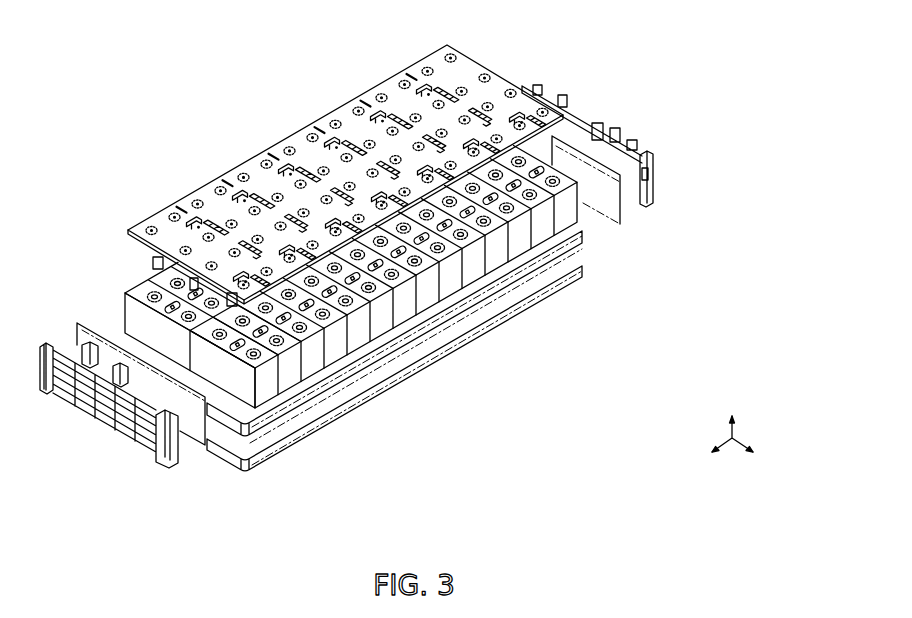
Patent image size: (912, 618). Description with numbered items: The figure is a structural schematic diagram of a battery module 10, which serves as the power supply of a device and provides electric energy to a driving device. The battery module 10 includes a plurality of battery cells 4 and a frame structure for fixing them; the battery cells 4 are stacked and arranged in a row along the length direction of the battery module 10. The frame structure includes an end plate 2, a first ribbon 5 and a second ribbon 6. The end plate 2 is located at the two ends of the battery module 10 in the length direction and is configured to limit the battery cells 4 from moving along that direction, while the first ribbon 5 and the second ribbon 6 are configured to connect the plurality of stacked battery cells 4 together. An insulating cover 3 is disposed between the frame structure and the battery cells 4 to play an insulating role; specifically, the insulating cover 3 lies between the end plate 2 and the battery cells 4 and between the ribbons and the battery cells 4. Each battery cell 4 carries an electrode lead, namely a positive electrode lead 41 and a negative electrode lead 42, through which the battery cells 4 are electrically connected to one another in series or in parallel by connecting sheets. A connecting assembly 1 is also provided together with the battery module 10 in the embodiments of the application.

The battery module 10 is at (190, 80).
The connecting assembly 1 is at (457, 56).
The end plate 2 is at (145, 448).
The insulating cover 3 is at (193, 428).
The battery cell 4 is at (571, 231).
The first ribbon 5 is at (460, 311).
The second ribbon 6 is at (413, 372).
The positive electrode lead 41 is at (316, 277).
The negative electrode lead 42 is at (127, 313).